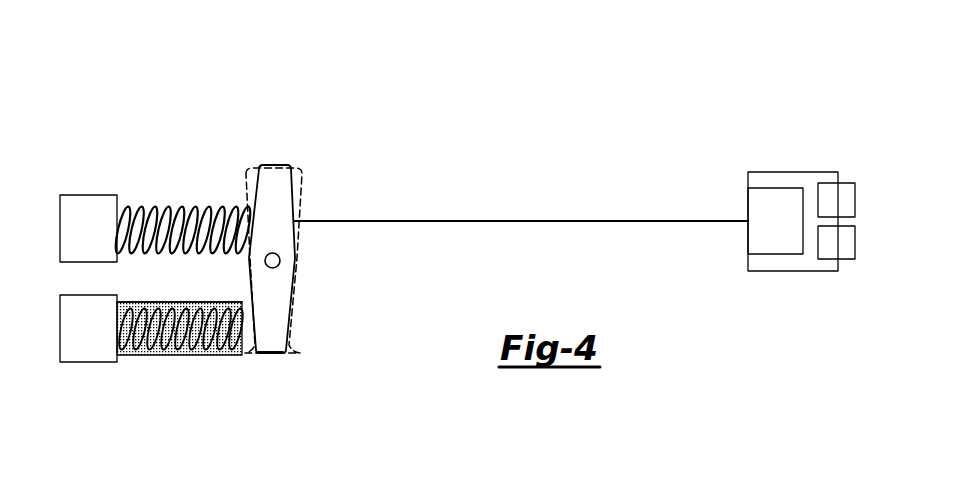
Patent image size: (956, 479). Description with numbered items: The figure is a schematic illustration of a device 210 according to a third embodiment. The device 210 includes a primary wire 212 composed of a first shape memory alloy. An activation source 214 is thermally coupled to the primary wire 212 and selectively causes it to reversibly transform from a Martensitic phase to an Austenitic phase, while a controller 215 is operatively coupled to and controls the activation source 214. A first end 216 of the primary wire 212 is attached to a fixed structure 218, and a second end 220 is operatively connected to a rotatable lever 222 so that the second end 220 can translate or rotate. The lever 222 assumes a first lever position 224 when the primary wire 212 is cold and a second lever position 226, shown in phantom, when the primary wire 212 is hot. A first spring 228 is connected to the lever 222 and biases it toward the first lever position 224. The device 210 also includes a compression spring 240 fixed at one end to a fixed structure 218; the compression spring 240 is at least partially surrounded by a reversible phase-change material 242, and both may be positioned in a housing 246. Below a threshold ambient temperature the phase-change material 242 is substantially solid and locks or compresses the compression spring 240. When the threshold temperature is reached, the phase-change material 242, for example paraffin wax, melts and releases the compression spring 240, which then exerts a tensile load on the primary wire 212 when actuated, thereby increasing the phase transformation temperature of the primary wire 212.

The device 210 is at (614, 134).
The primary wire 212 is at (521, 219).
The activation source 214 is at (850, 213).
The controller 215 is at (850, 257).
The first end 216 is at (748, 221).
The fixed structure 218 is at (101, 241).
The second end 220 is at (296, 230).
The rotatable lever 222 is at (256, 166).
The first lever position 224 is at (300, 326).
The second lever position 226 is at (303, 190).
The first spring 228 is at (163, 209).
The compression spring 240 is at (151, 356).
The reversible phase-change material 242 is at (203, 354).
The housing 246 is at (183, 303).